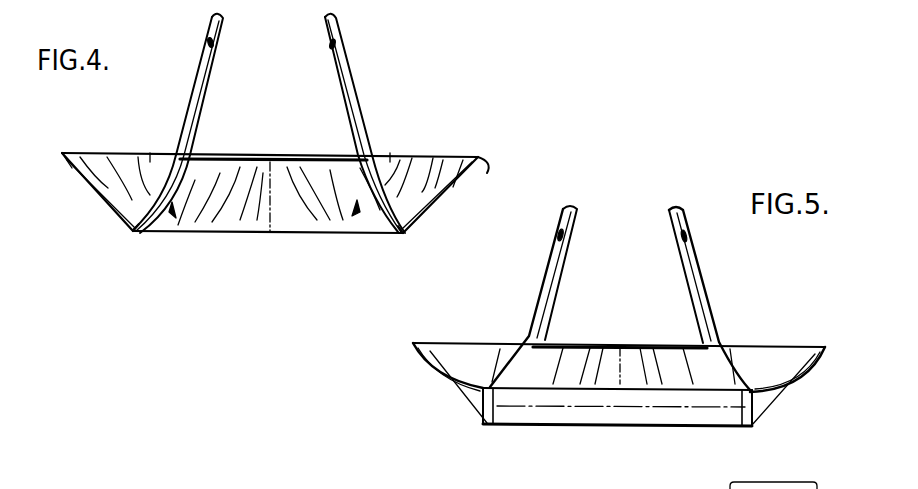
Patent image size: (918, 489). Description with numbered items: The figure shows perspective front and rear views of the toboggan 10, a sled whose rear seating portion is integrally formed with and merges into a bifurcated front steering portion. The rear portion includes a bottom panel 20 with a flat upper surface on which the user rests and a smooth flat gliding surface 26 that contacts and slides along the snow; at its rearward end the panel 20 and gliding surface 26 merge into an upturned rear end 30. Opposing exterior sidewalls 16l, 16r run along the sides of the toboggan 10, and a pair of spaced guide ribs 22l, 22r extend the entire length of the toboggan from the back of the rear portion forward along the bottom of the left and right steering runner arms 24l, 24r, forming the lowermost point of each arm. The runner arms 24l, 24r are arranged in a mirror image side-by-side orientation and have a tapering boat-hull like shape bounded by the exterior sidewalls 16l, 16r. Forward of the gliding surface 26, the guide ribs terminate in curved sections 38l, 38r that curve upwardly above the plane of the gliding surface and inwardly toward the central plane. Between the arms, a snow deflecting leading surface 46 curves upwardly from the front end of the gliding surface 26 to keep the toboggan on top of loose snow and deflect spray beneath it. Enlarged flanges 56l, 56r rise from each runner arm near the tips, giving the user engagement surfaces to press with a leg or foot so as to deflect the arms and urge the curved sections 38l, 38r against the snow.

In FIG. 4, the toboggan 10 is at (458, 103).
In FIG. 5, the toboggan 10 is at (700, 217).
In FIG. 4, the left exterior sidewall 16l is at (492, 157).
In FIG. 5, the left exterior sidewall 16l is at (457, 383).
In FIG. 4, the right exterior sidewall 16r is at (80, 190).
In FIG. 5, the right exterior sidewall 16r is at (790, 381).
In FIG. 4, the bottom panel 20 is at (265, 234).
In FIG. 4, the left guide rib 22l is at (398, 235).
In FIG. 5, the left guide rib 22l is at (485, 428).
In FIG. 4, the right guide rib 22r is at (133, 232).
In FIG. 5, the right guide rib 22r is at (757, 414).
In FIG. 4, the left steering runner arm 24l is at (354, 217).
In FIG. 4, the right steering runner arm 24r is at (175, 210).
In FIG. 5, the gliding surface 26 is at (573, 427).
In FIG. 5, the upturned rear end 30 is at (650, 412).
In FIG. 4, the left forwardmost curved section 38l is at (397, 157).
In FIG. 4, the right forwardmost curved section 38r is at (138, 155).
In FIG. 4, the snow deflecting leading surface 46 is at (248, 157).
In FIG. 5, the snow deflecting leading surface 46 is at (625, 343).
In FIG. 4, the left enlarged flange 56l is at (357, 95).
In FIG. 5, the left enlarged flange 56l is at (563, 223).
In FIG. 4, the right enlarged flange 56r is at (197, 70).
In FIG. 5, the right enlarged flange 56r is at (707, 295).